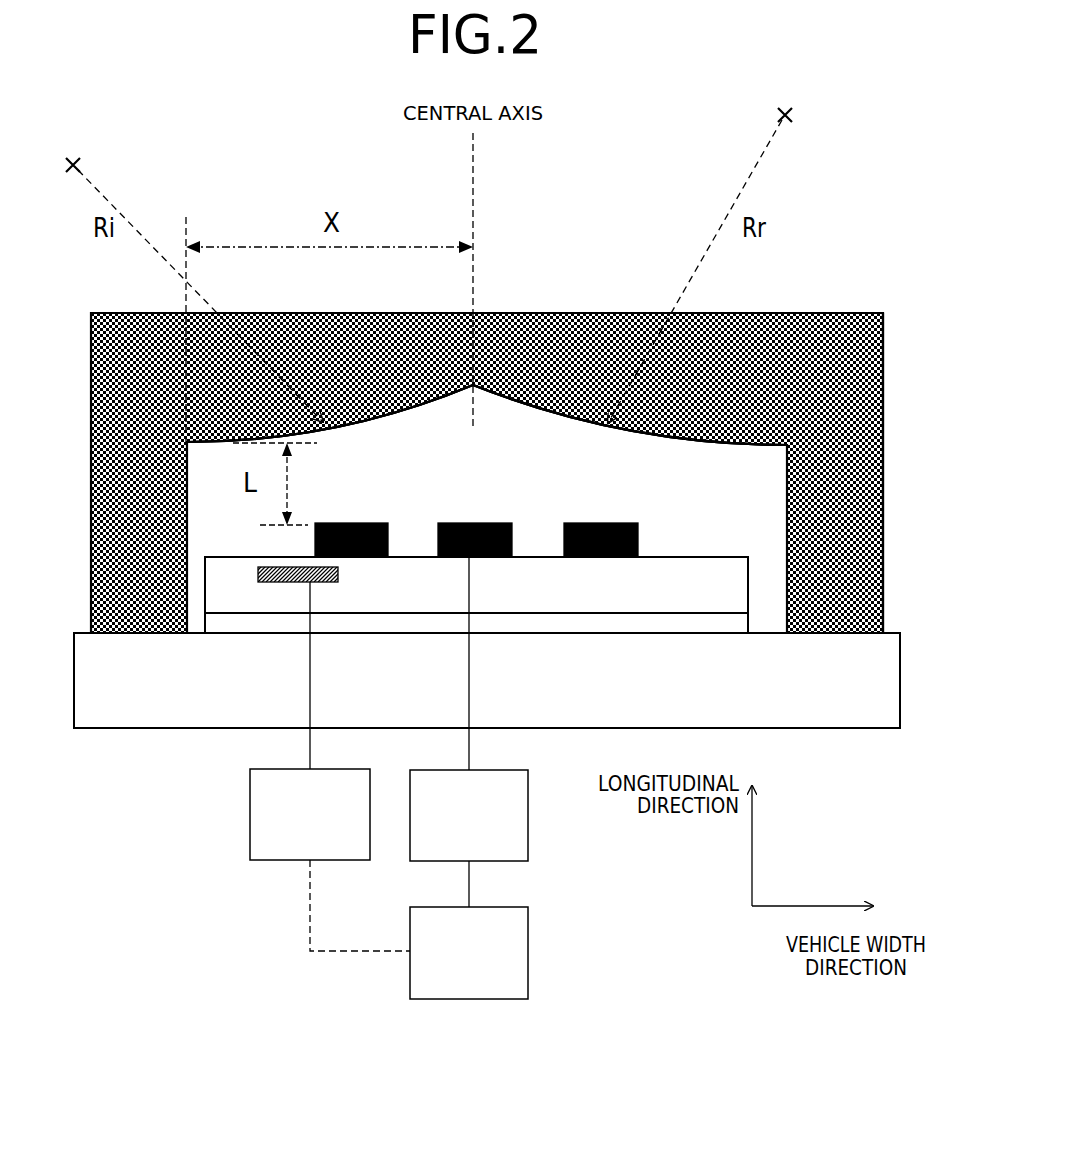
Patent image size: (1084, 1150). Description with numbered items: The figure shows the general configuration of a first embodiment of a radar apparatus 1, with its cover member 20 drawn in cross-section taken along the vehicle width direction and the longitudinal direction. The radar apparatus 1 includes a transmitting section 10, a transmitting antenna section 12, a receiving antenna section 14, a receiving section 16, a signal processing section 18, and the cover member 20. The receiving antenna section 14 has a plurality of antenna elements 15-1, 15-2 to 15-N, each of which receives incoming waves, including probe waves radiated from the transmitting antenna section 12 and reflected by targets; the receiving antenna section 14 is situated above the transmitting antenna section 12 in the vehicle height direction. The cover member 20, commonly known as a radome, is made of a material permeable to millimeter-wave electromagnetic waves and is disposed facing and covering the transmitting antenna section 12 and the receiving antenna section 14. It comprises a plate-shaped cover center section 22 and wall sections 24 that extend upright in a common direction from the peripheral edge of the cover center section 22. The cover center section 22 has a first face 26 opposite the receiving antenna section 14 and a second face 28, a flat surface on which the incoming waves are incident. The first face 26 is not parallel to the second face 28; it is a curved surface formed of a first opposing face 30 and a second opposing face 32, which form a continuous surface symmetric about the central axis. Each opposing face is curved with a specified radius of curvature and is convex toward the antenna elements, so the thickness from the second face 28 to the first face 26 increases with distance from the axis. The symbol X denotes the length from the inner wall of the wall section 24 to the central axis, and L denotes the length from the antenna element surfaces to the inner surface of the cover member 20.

The radar apparatus 1 is at (635, 208).
The transmitting section 10 is at (250, 840).
The transmitting antenna section 12 is at (268, 600).
The receiving antenna section 14 is at (652, 522).
The antenna element 15-1 is at (378, 557).
The antenna element 15-2 is at (507, 557).
The antenna element 15-N is at (618, 557).
The receiving section 16 is at (528, 825).
The signal processing section 18 is at (528, 950).
The cover member 20 is at (843, 263).
The cover center section 22 is at (780, 312).
The wall section 24 is at (884, 485).
The first face 26 is at (527, 458).
The second face 28 is at (515, 307).
The first opposing face 30 is at (397, 420).
The second opposing face 32 is at (535, 422).